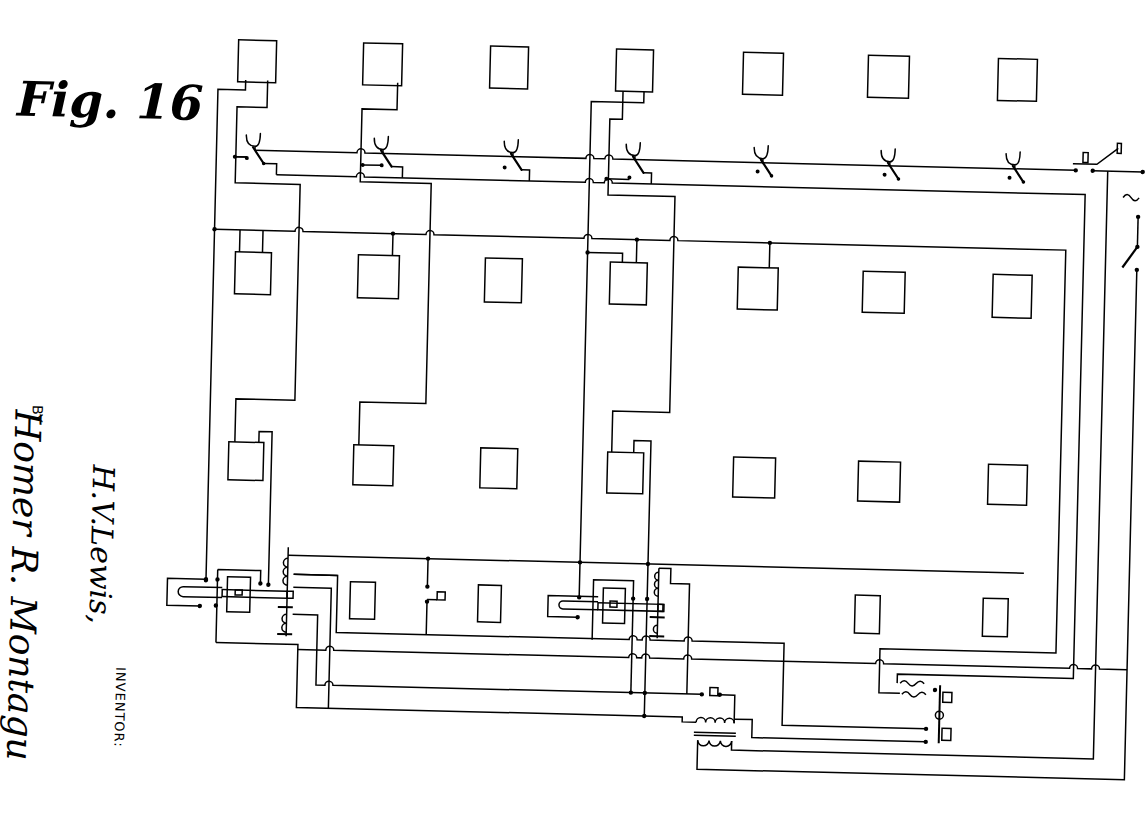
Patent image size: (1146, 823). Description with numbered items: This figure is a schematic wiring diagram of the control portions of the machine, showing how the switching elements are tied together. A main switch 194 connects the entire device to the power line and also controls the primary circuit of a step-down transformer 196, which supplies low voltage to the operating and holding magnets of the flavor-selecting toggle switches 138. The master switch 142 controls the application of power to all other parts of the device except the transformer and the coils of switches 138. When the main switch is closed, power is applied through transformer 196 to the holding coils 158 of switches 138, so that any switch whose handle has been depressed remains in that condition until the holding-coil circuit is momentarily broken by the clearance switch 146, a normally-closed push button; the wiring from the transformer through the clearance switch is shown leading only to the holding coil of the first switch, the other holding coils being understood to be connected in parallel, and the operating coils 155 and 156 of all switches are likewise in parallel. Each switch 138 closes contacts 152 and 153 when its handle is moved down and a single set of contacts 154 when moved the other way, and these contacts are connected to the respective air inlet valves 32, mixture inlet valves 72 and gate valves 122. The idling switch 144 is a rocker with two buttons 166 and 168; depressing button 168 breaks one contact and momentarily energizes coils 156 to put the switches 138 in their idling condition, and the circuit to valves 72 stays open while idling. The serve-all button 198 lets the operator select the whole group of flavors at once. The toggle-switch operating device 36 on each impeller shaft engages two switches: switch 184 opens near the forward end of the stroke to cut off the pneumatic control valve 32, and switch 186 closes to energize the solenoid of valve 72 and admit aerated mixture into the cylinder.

The pneumatic control valve 32 is at (638, 71).
The toggle-switch operating device 36 is at (258, 156).
The mixture inlet valve 72 is at (633, 285).
The gate valve 122 is at (628, 474).
The toggle switch 138 is at (258, 556).
The master switch 142 is at (1091, 144).
The idling switch 144 is at (955, 703).
The magnetic clearance push-button 146 is at (725, 684).
The contacts 152 is at (205, 620).
The contacts 153 is at (268, 606).
The contacts 154 is at (210, 587).
The operating coil 155 is at (306, 546).
The operating coil 156 is at (315, 585).
The holding coil 158 is at (283, 631).
The button 166 is at (959, 690).
The button 168 is at (959, 727).
The toggle switch 184 is at (241, 170).
The toggle switch 186 is at (262, 175).
The main switch 194 is at (1126, 242).
The step-down transformer 196 is at (694, 750).
The serve-all button 198 is at (457, 592).